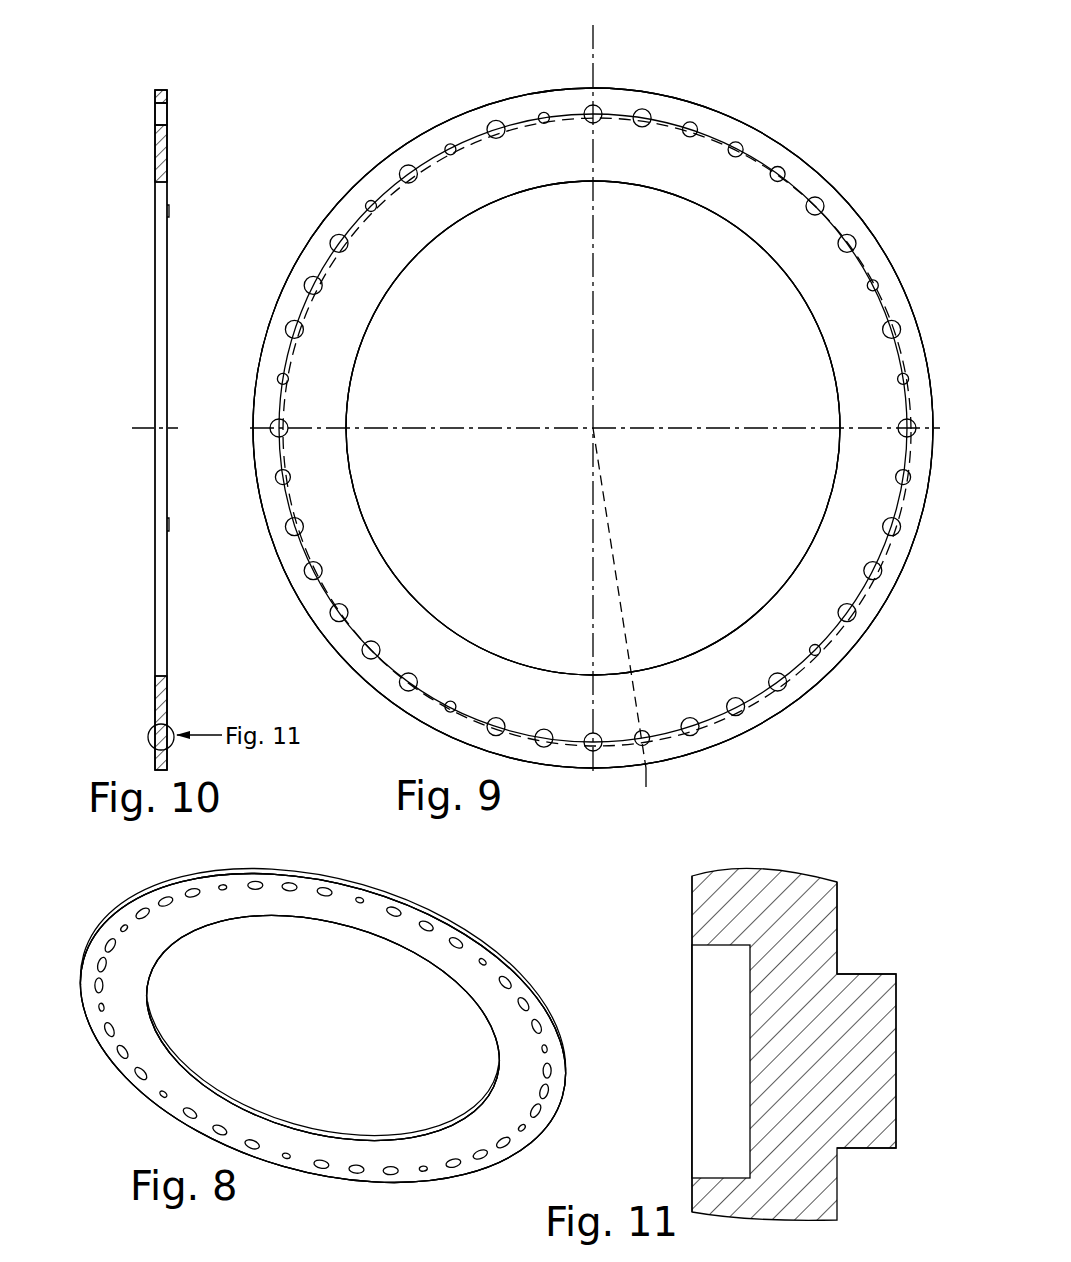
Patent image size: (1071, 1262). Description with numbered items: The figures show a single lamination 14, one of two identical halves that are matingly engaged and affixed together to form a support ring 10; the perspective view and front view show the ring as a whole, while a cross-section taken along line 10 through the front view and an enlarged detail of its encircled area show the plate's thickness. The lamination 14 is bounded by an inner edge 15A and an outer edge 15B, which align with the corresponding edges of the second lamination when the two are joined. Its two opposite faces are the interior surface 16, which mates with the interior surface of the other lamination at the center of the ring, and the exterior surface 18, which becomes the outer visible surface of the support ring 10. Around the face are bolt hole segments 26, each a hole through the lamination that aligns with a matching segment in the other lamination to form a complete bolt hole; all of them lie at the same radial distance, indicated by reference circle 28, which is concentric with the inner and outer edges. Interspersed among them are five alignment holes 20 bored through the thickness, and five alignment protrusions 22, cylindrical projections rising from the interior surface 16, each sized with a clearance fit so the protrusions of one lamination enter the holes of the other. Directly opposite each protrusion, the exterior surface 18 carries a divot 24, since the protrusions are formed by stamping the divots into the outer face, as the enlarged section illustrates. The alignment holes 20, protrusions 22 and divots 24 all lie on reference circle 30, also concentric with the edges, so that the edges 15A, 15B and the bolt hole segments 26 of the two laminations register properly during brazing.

In FIG. 9, the support ring 10 is at (599, 25).
In FIG. 10, the lamination 14 is at (142, 79).
In FIG. 9, the lamination 14 is at (316, 104).
In FIG. 8, the lamination 14 is at (97, 901).
In FIG. 11, the lamination 14 is at (790, 880).
In FIG. 9, the inner edge 15A is at (751, 246).
In FIG. 8, the inner edge 15A is at (269, 1107).
In FIG. 9, the outer edge 15B is at (771, 131).
In FIG. 8, the outer edge 15B is at (157, 1117).
In FIG. 10, the interior surface 16 is at (169, 690).
In FIG. 11, the interior surface 16 is at (840, 922).
In FIG. 10, the exterior surface 18 is at (151, 144).
In FIG. 9, the exterior surface 18 is at (815, 250).
In FIG. 8, the exterior surface 18 is at (147, 1040).
In FIG. 11, the exterior surface 18 is at (689, 911).
In FIG. 9, the alignment hole 20 is at (545, 112).
In FIG. 8, the alignment hole 20 is at (486, 963).
In FIG. 10, the alignment protrusion 22 is at (170, 217).
In FIG. 11, the alignment protrusion 22 is at (883, 1002).
In FIG. 10, the divot 24 is at (149, 740).
In FIG. 9, the divot 24 is at (639, 746).
In FIG. 8, the divot 24 is at (548, 1048).
In FIG. 11, the divot 24 is at (672, 1106).
In FIG. 10, the bolt hole segment 26 is at (167, 112).
In FIG. 9, the bolt hole segment 26 is at (451, 140).
In FIG. 8, the bolt hole segment 26 is at (432, 930).
In FIG. 9, the reference circle 28 is at (323, 267).
In FIG. 9, the reference circle 30 is at (360, 232).